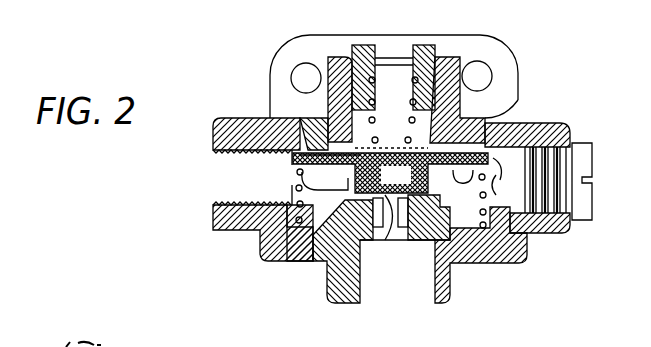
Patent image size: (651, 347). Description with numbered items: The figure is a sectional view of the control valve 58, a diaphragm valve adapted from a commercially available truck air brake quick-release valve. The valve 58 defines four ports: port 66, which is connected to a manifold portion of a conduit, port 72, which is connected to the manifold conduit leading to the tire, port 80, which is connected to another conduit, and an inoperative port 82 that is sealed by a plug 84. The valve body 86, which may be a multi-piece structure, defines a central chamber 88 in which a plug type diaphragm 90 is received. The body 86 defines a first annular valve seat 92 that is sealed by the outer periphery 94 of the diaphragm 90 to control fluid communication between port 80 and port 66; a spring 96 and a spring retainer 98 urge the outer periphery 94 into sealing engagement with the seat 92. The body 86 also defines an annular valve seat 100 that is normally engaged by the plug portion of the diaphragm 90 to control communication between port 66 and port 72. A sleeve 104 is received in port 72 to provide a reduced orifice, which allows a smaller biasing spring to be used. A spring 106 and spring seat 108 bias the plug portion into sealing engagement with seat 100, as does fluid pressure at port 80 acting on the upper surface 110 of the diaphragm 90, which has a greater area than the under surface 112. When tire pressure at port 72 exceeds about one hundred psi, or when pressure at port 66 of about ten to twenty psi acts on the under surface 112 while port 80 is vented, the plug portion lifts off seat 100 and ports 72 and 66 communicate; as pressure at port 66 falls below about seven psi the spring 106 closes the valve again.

The control valve 58 is at (533, 55).
The port 66 is at (240, 172).
The port 72 is at (380, 278).
The port 80 is at (403, 58).
The inoperative port 82 is at (540, 125).
The plug 84 is at (553, 178).
The body 86 is at (497, 252).
The central chamber 88 is at (518, 100).
The plug type diaphragm 90 is at (390, 170).
The first annular valve seat 92 is at (288, 117).
The outer periphery 94 is at (501, 193).
The spring 96 is at (318, 210).
The spring retainer 98 is at (296, 188).
The annular valve seat 100 is at (393, 228).
The sleeve 104 is at (437, 227).
The spring 106 is at (388, 54).
The spring seat 108 is at (350, 44).
The upper surface 110 is at (310, 157).
The under surface 112 is at (429, 205).